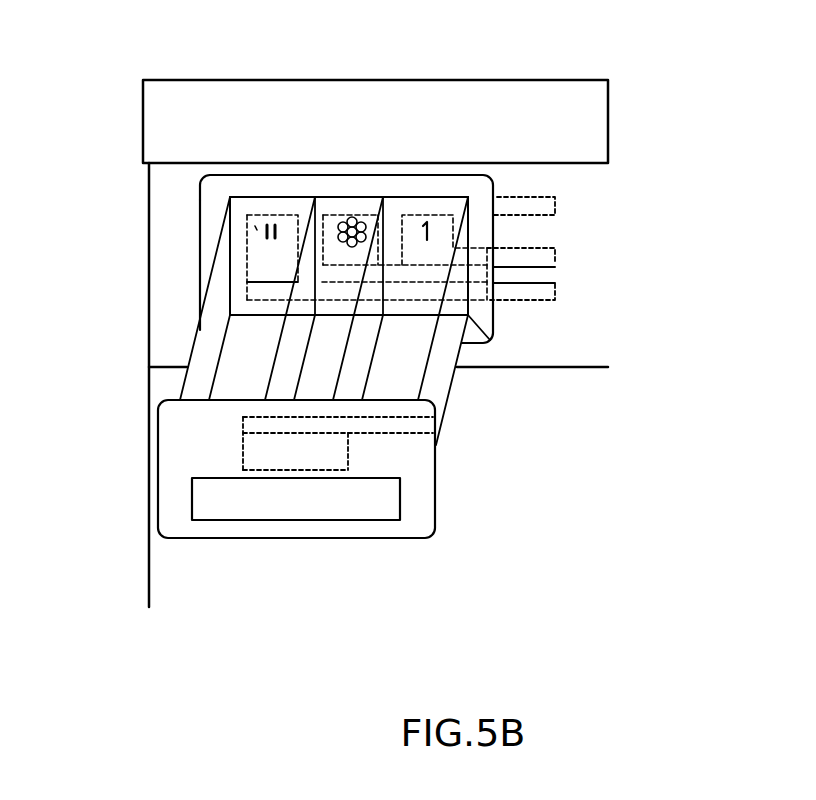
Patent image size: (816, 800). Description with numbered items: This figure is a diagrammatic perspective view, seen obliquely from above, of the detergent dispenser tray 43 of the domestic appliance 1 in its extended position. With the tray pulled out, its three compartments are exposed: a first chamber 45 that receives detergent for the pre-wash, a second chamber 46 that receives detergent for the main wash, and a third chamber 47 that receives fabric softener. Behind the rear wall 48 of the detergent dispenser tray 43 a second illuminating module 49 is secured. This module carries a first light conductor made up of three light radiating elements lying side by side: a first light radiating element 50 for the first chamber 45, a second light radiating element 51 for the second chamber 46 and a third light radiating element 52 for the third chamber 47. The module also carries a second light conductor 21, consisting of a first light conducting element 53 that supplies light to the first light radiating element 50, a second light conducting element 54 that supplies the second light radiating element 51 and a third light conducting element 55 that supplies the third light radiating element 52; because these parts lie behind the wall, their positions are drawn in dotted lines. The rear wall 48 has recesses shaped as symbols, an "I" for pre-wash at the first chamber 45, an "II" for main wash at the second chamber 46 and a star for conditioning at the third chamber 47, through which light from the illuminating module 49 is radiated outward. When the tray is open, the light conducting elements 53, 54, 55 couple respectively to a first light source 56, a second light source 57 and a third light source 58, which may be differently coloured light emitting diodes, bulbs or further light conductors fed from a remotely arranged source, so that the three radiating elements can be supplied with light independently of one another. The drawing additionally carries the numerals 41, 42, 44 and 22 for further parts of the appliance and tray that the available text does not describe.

The household appliance 1 is at (245, 478).
The second light conductor 21 is at (401, 412).
The label strip 22 is at (442, 428).
The kitchen furniture 41 is at (686, 543).
The front panel 42 is at (206, 463).
The detergent dispenser tray 43 is at (192, 330).
The connector 44 is at (548, 200).
The first chamber 45 is at (416, 383).
The second chamber 46 is at (225, 383).
The third chamber 47 is at (306, 383).
The rear wall 48 is at (237, 270).
The second illuminating module 49 is at (237, 250).
The first light radiating element 50 is at (445, 178).
The second light radiating element 51 is at (238, 196).
The third light radiating element 52 is at (333, 212).
The first light conducting element 53 is at (467, 195).
The second light conducting element 54 is at (460, 378).
The third light conducting element 55 is at (458, 308).
The first light source 56 is at (570, 253).
The second light source 57 is at (571, 303).
The third light source 58 is at (572, 275).